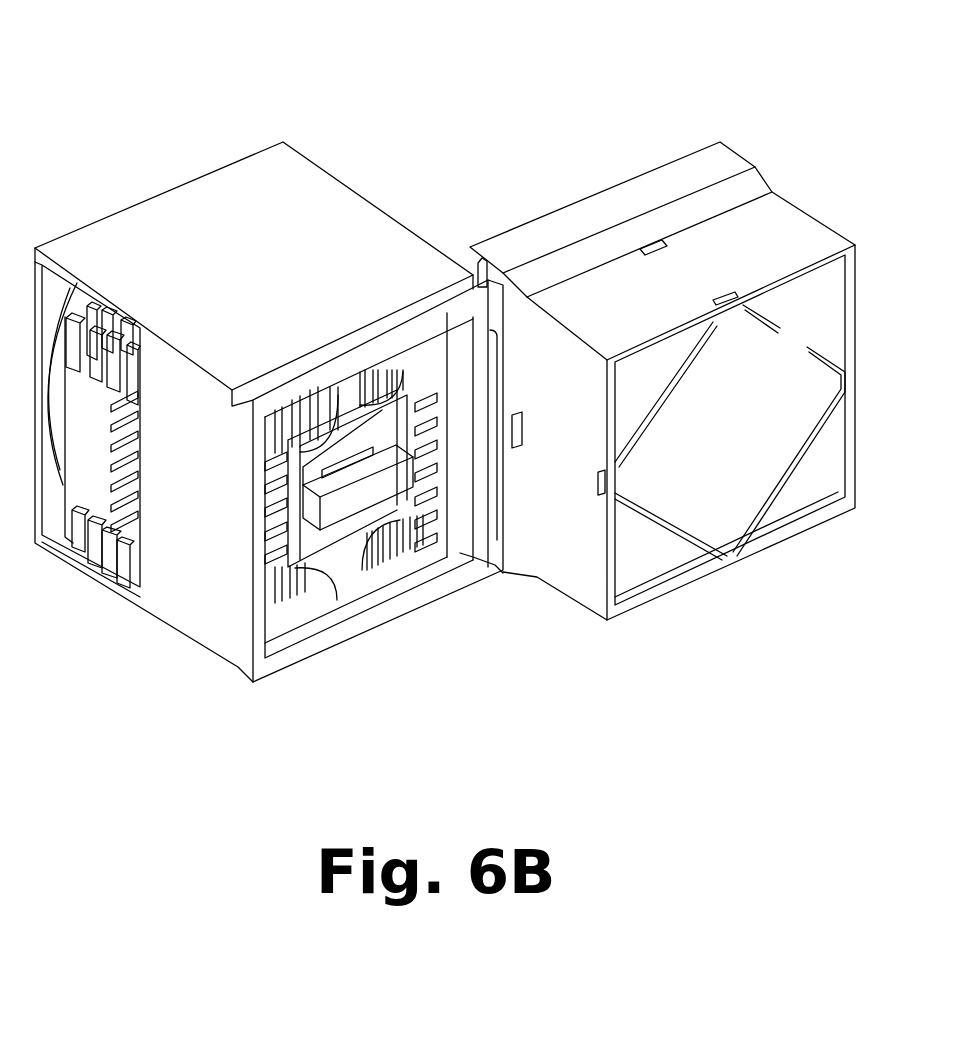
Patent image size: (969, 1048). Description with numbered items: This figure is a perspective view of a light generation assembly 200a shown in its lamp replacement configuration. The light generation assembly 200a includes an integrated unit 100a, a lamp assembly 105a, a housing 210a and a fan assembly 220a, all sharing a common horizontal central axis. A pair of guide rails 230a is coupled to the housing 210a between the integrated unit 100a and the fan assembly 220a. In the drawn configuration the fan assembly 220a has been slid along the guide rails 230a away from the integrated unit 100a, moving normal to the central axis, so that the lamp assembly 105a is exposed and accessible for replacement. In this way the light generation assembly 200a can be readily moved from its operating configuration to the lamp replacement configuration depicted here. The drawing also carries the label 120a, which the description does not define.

The light generation assembly 200a is at (218, 146).
The housing 210a is at (317, 240).
The guide rails 230a is at (484, 250).
The integrated unit 100a is at (120, 462).
The heat sink fins 120a is at (293, 593).
The lamp assembly 105a is at (350, 503).
The fan assembly 220a is at (723, 492).